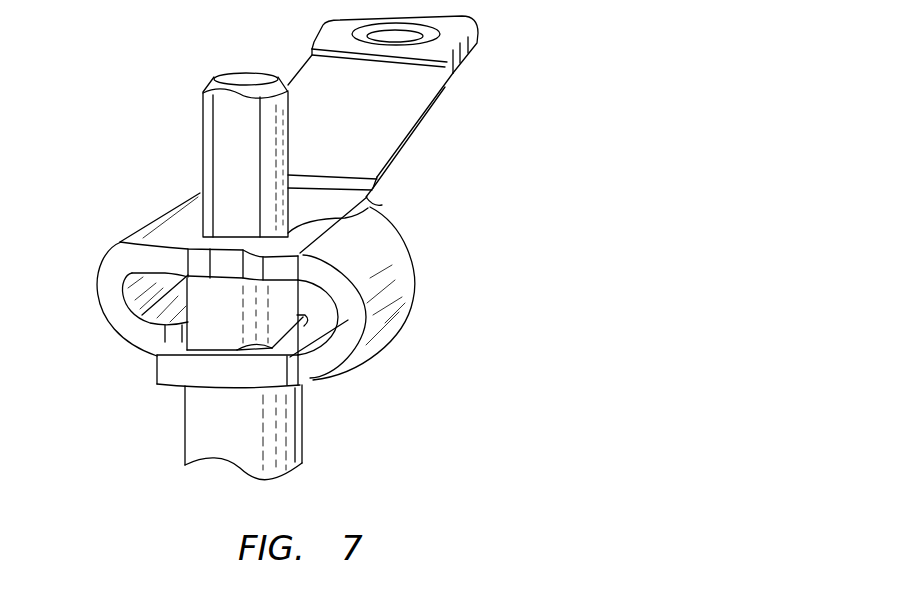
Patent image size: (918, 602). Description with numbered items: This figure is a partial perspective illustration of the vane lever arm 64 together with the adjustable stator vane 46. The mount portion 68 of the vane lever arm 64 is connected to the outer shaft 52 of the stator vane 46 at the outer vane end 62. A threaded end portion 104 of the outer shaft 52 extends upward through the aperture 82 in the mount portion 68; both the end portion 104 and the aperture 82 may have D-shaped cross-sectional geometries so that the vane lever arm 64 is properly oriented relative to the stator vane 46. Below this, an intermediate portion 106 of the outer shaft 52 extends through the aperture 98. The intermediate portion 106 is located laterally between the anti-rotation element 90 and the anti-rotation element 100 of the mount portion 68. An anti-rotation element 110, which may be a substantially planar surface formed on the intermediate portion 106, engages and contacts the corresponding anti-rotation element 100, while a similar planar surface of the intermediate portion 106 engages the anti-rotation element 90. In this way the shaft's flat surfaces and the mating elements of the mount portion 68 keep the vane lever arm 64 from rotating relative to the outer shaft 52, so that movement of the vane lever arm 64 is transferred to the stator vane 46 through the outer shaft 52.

The stator vane 46 is at (174, 440).
The outer shaft 52 is at (306, 437).
The outer vane end 62 is at (240, 78).
The vane lever arm 64 is at (488, 43).
The mount portion 68 is at (110, 234).
The aperture 82 is at (345, 221).
The anti-rotation element 90 is at (212, 356).
The aperture 98 is at (238, 352).
The anti-rotation element 100 is at (323, 323).
The threaded end portion 104 is at (202, 148).
The intermediate portion 106 is at (196, 298).
The anti-rotation element 110 is at (297, 308).